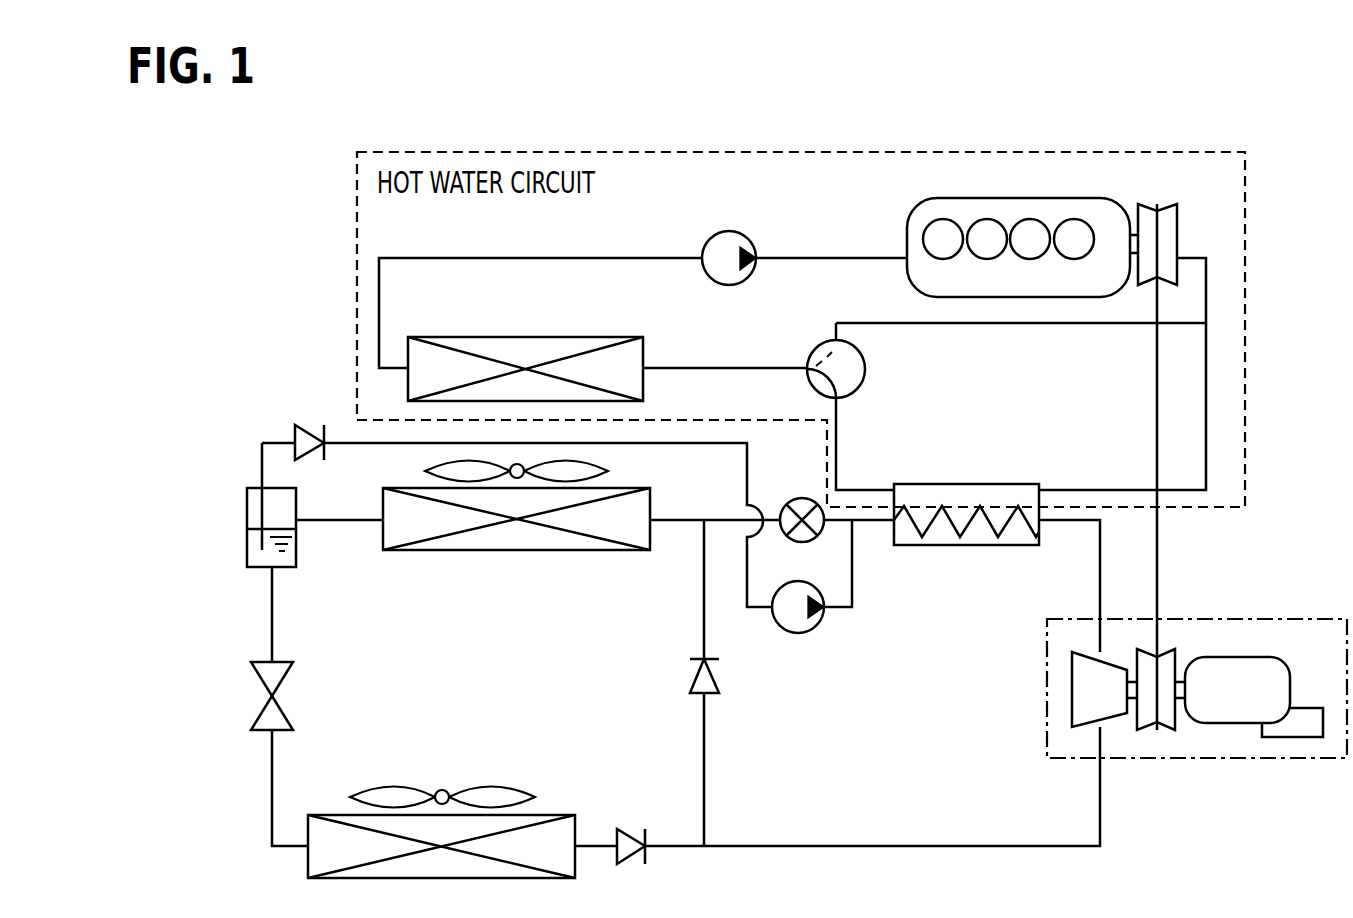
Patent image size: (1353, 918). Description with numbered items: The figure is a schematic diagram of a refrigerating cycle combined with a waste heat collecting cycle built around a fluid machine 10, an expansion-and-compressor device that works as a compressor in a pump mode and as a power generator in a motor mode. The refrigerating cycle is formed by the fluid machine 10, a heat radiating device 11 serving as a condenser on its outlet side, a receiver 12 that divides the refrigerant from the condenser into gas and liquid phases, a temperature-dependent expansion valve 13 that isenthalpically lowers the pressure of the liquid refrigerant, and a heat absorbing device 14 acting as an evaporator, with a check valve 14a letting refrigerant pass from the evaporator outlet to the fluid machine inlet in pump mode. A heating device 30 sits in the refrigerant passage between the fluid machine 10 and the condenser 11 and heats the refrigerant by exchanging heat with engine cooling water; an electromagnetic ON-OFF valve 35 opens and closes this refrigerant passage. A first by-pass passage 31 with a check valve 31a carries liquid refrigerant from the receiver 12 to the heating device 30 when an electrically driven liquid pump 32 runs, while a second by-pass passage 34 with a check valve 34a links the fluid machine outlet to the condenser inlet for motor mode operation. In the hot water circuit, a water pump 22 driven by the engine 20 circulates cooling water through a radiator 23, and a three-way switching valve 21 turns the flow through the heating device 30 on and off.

The fluid machine 10 is at (1268, 619).
The heat radiating device 11 is at (590, 550).
The receiver 12 is at (296, 558).
The expansion valve 13 is at (283, 703).
The heat absorbing device 14 is at (558, 815).
The check valve 14a is at (625, 829).
The engine 20 is at (1012, 198).
The switching valve 21 is at (865, 369).
The water pump 22 is at (729, 231).
The radiator 23 is at (549, 337).
The heating device 30 is at (982, 484).
The first by-pass passage 31 is at (703, 443).
The check valve 31a is at (310, 425).
The liquid pump 32 is at (818, 628).
The second by-pass passage 34 is at (704, 769).
The check valve 34a is at (719, 680).
The ON-OFF valve 35 is at (803, 498).